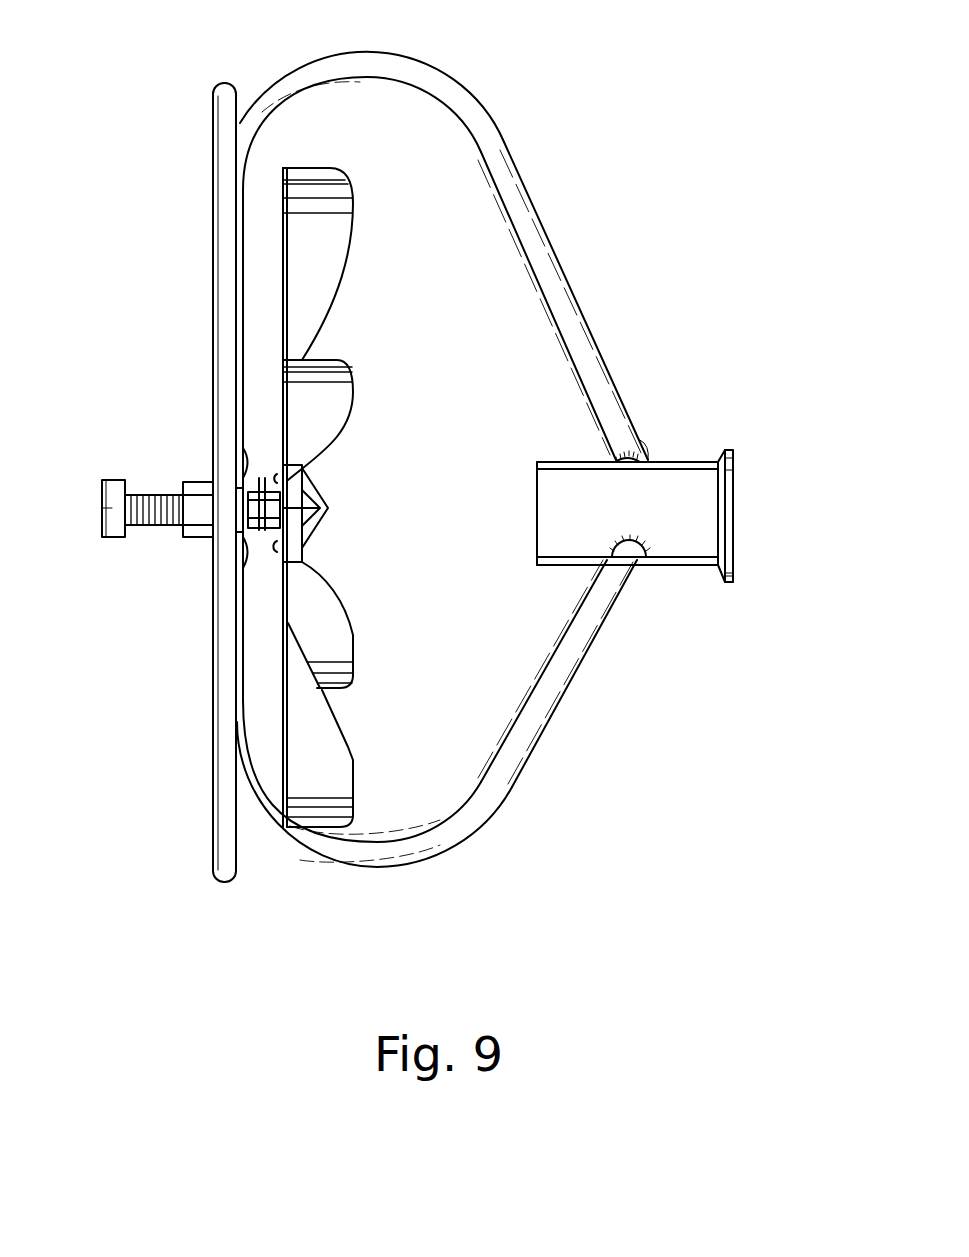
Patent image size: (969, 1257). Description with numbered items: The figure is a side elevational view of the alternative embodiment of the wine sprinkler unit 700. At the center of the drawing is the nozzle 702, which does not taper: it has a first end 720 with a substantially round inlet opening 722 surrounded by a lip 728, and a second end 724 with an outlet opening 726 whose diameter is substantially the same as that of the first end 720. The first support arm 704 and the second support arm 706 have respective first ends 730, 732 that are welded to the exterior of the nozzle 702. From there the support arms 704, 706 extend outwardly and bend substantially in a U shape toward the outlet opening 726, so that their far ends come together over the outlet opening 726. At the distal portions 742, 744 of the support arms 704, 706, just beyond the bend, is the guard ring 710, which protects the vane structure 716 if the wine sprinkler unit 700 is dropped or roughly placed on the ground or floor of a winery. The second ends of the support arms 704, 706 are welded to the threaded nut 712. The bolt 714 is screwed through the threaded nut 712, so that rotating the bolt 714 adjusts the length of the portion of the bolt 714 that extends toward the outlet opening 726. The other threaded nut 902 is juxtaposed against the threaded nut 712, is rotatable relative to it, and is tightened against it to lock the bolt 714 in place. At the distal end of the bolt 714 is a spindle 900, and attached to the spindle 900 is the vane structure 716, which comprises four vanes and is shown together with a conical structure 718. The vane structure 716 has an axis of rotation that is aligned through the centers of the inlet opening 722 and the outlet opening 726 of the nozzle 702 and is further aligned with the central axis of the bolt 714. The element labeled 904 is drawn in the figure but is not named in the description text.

The wine sprinkler unit 700 is at (590, 104).
The nozzle 702 is at (566, 503).
The first support arm 704 is at (560, 210).
The second support arm 706 is at (558, 760).
The guard ring 710 is at (214, 878).
The threaded nut 712 is at (242, 444).
The bolt 714 is at (102, 509).
The vane structure 716 is at (358, 311).
The conical structure 718 is at (350, 480).
The first end 720 is at (718, 565).
The inlet opening 722 is at (778, 510).
The second end 724 is at (535, 478).
The outlet opening 726 is at (506, 525).
The lip 728 is at (735, 583).
The first end of first support arm 730 is at (645, 460).
The first end of second support arm 732 is at (637, 552).
The distal portion of first support arm 742 is at (263, 95).
The distal portion of second support arm 744 is at (282, 838).
The spindle 900 is at (250, 550).
The other threaded nut 902 is at (196, 538).
The inner nut 904 is at (270, 478).